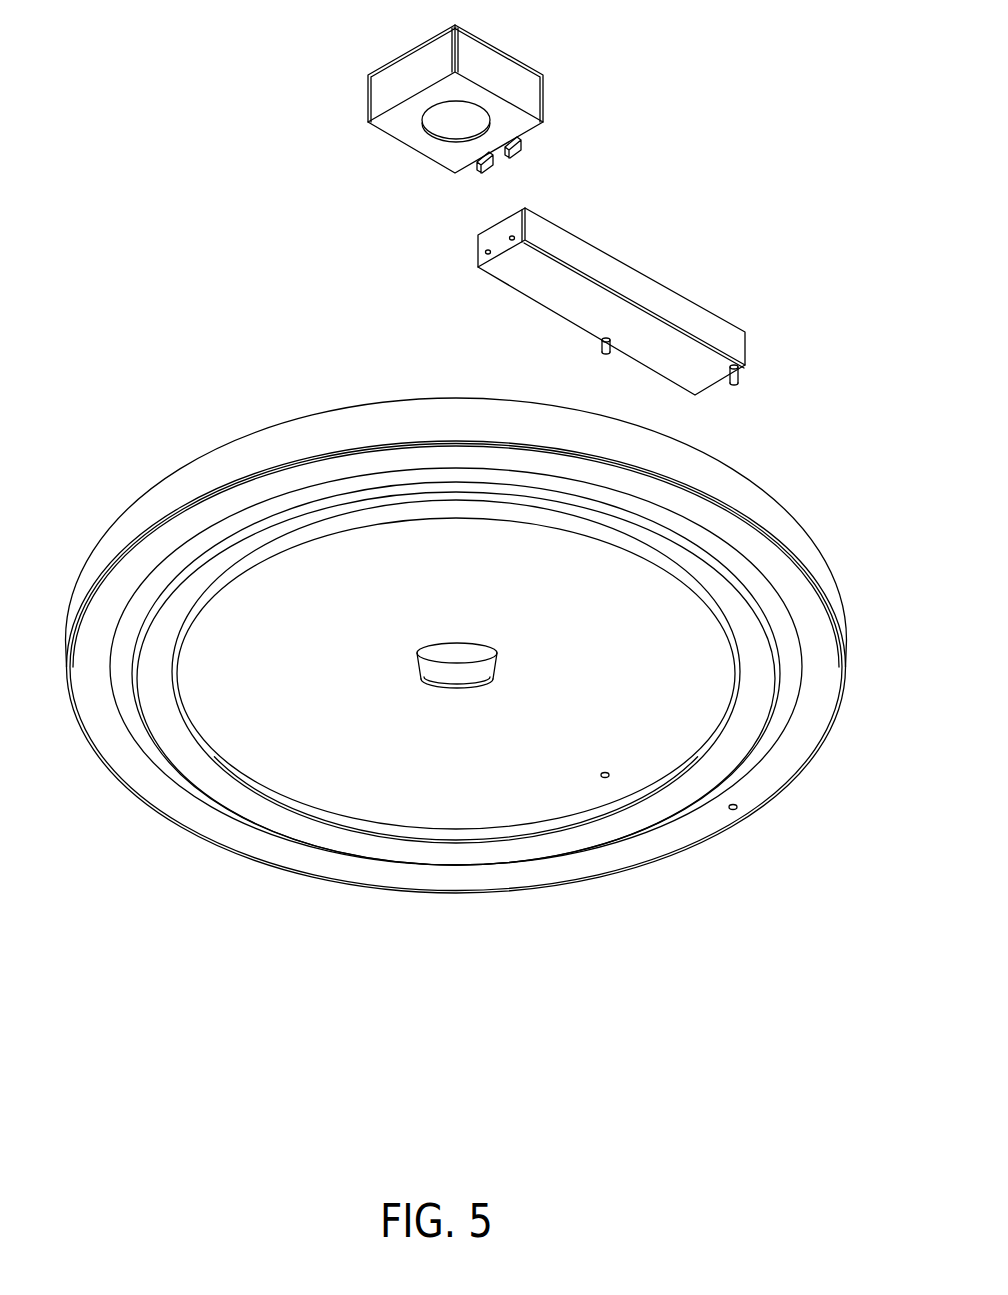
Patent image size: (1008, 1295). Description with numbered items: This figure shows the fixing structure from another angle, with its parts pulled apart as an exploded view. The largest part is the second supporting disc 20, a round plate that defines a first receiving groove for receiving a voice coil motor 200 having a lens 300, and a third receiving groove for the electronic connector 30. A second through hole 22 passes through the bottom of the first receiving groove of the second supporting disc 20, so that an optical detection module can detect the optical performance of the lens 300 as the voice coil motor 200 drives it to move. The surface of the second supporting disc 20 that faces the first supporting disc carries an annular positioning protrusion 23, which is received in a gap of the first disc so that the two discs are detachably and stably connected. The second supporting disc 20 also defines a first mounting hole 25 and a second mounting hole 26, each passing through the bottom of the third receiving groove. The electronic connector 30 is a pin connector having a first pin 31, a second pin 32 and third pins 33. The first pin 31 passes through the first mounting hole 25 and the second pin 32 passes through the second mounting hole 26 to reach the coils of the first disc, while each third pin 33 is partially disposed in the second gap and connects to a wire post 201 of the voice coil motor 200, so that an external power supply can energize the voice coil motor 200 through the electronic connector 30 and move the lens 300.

The second supporting disc 20 is at (462, 681).
The second through hole 22 is at (452, 672).
The positioning protrusion 23 is at (215, 785).
The first mounting hole 25 is at (607, 780).
The second mounting hole 26 is at (737, 810).
The electronic connector 30 is at (593, 304).
The first pin 31 is at (600, 342).
The second pin 32 is at (739, 374).
The third pin 33 is at (487, 250).
The voice coil motor 200 is at (503, 65).
The wire post 201 is at (523, 141).
The lens 300 is at (438, 125).